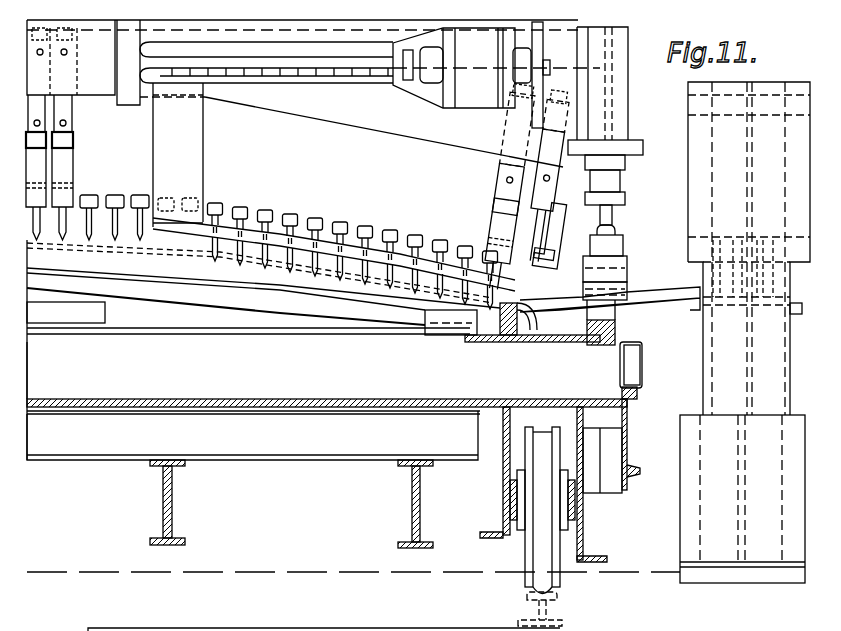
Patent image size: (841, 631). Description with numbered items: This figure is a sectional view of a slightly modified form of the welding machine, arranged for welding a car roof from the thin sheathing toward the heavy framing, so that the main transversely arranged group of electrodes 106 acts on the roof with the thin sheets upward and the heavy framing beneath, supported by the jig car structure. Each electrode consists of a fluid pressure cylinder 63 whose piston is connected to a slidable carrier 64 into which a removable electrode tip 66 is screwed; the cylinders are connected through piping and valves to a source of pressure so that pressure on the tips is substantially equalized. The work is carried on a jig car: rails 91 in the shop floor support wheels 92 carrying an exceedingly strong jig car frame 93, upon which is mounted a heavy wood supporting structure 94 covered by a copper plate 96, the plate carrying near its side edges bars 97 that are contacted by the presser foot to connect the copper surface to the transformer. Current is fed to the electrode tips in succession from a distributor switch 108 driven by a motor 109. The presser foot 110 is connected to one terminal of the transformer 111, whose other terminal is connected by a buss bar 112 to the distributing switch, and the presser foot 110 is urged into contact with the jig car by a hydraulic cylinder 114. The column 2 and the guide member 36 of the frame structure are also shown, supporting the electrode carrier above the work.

The machine frame column 2 is at (712, 372).
The guide rail 36 is at (385, 117).
The fluid pressure cylinder 63 is at (58, 116).
The slidable carrier 64 is at (142, 197).
The electrode tip 66 is at (62, 237).
The rail 91 is at (558, 606).
The wheel 92 is at (538, 555).
The jig car frame 93 is at (353, 521).
The wood supporting structure 94 is at (327, 378).
The copper plate 96 is at (220, 333).
The bar 97 is at (616, 328).
The group of electrodes 106 is at (334, 244).
The distributor switch 108 is at (302, 62).
The motor 109 is at (496, 75).
The presser foot 110 is at (626, 281).
The transformer 111 is at (690, 200).
The buss bar 112 is at (178, 155).
The hydraulic cylinder 114 is at (612, 182).